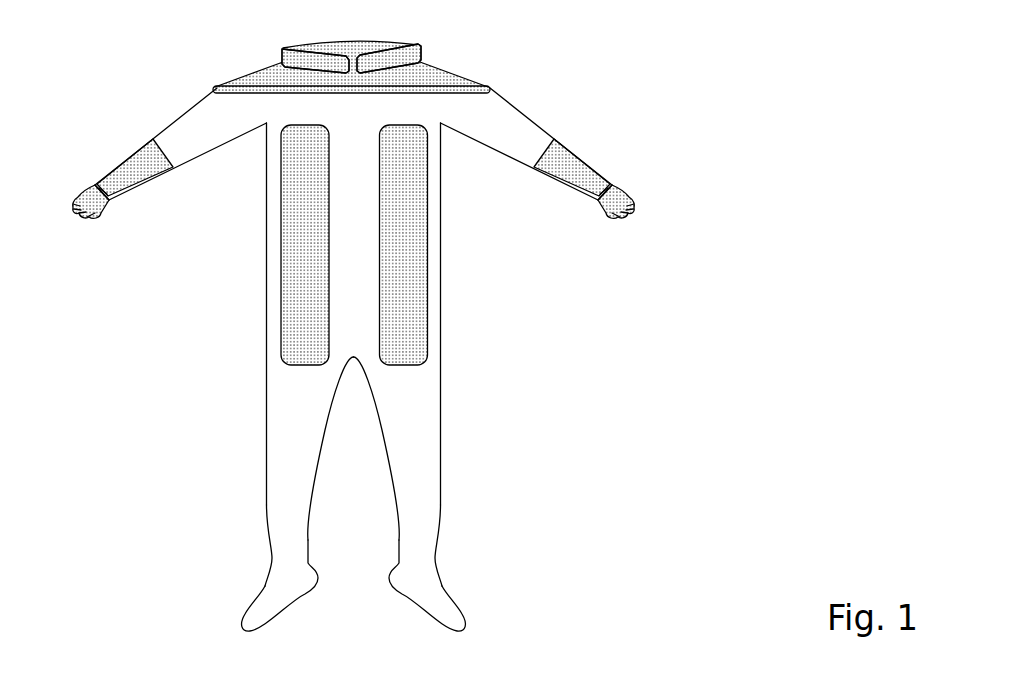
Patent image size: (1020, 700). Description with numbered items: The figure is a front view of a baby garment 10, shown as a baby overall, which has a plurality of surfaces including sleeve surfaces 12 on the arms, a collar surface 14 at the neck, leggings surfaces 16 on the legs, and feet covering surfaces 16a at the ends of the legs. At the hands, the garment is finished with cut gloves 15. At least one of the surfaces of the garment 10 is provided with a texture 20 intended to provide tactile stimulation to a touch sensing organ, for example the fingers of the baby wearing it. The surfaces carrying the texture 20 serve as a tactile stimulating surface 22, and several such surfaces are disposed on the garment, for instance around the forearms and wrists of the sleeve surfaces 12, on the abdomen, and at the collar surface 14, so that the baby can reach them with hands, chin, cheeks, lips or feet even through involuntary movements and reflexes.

The baby garment 10 is at (762, 218).
The sleeve surfaces 12 is at (202, 128).
The collar surface 14 is at (445, 78).
The cut gloves 15 is at (100, 208).
The leggings surfaces 16 is at (410, 445).
The feet covering surfaces 16a is at (427, 573).
The texture 20 is at (135, 158).
The tactile stimulating surface 22 is at (292, 80).